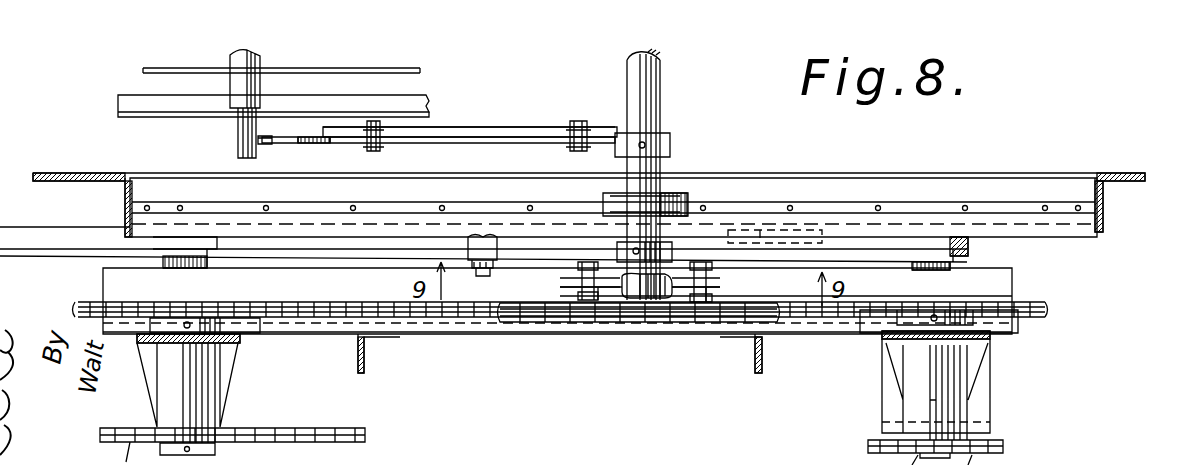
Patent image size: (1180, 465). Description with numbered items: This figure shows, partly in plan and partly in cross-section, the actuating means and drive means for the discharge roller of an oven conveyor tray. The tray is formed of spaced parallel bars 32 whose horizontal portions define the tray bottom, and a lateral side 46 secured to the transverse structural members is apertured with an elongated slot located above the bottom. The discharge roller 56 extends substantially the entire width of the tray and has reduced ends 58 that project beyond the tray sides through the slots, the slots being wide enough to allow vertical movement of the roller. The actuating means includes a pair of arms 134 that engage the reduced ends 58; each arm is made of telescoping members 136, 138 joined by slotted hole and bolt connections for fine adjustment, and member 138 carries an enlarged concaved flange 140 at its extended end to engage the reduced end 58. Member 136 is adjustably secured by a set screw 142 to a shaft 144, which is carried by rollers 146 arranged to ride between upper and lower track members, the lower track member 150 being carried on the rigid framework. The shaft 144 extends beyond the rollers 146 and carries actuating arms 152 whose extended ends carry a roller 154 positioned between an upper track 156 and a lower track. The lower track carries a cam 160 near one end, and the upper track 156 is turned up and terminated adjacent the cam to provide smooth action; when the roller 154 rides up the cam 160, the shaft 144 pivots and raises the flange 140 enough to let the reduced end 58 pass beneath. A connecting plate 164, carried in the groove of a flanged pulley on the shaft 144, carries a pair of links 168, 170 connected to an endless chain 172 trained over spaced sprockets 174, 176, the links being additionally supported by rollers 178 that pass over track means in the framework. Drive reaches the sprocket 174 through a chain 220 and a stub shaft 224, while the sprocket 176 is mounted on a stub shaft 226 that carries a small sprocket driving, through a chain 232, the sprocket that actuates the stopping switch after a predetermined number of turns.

The spaced parallel bars 32 is at (340, 72).
The tray lateral side 46 is at (170, 120).
The discharge roller 56 is at (262, 70).
The reduced ends 58 is at (240, 138).
The arms 134 is at (477, 115).
The telescoping member 136 is at (495, 130).
The telescoping member 138 is at (476, 143).
The concaved flange 140 is at (266, 144).
The set screw 142 is at (670, 150).
The shaft 144 is at (660, 86).
The rollers 146 is at (677, 193).
The lower track member 150 is at (728, 203).
The actuating arms 152 is at (538, 262).
The roller 154 is at (488, 233).
The upper track 156 is at (428, 237).
The cam 160 is at (805, 240).
The connecting plate 164 is at (622, 290).
The link 168 is at (600, 300).
The link 170 is at (672, 300).
The endless chain 172 is at (652, 300).
The sprocket 174 is at (216, 310).
The sprocket 176 is at (1013, 300).
The rollers 178 is at (583, 282).
The chain 220 is at (355, 428).
The stub shaft 224 is at (200, 328).
The stub shaft 226 is at (960, 437).
The chain 232 is at (1005, 445).